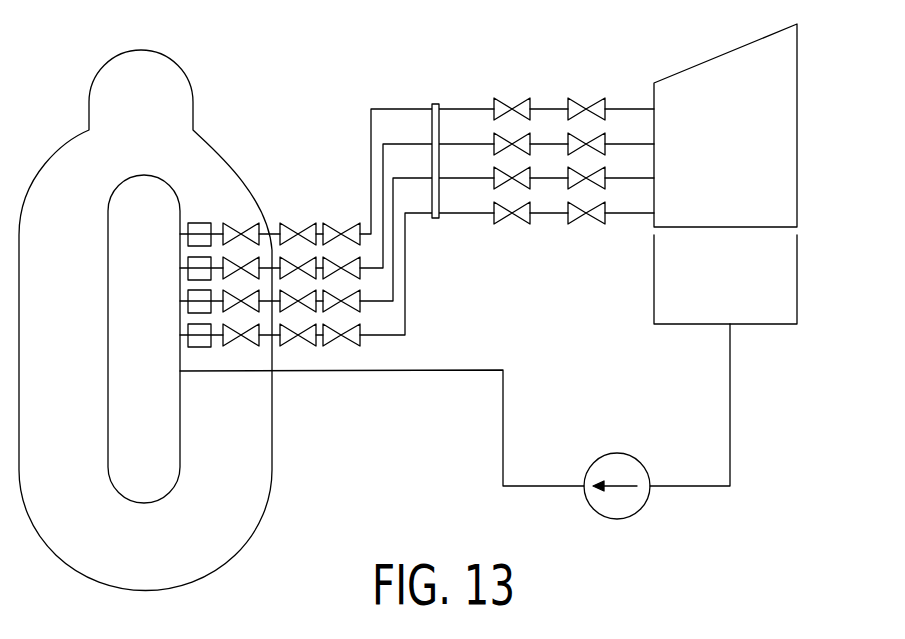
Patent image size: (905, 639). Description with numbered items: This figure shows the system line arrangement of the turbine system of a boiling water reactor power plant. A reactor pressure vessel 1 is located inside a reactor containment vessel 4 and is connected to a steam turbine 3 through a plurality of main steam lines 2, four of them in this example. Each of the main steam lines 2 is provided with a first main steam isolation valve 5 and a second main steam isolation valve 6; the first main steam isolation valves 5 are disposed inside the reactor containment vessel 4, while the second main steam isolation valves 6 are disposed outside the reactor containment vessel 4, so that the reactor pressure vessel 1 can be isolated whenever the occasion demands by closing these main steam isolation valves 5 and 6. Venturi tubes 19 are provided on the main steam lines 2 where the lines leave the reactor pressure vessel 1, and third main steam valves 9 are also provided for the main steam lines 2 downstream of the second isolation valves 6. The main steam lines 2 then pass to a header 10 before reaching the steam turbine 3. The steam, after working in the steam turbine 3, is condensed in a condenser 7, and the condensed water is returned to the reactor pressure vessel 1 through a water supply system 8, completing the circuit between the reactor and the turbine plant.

The reactor pressure vessel 1 is at (120, 343).
The main steam lines 2 is at (425, 213).
The steam turbine 3 is at (785, 134).
The reactor containment vessel 4 is at (255, 444).
The first main steam isolation valves 5 is at (240, 222).
The second main steam isolation valves 6 is at (297, 222).
The condenser 7 is at (783, 282).
The water supply system 8 is at (545, 486).
The third main steam valves 9 is at (342, 222).
The header 10 is at (435, 104).
The Venturi tubes 19 is at (198, 222).